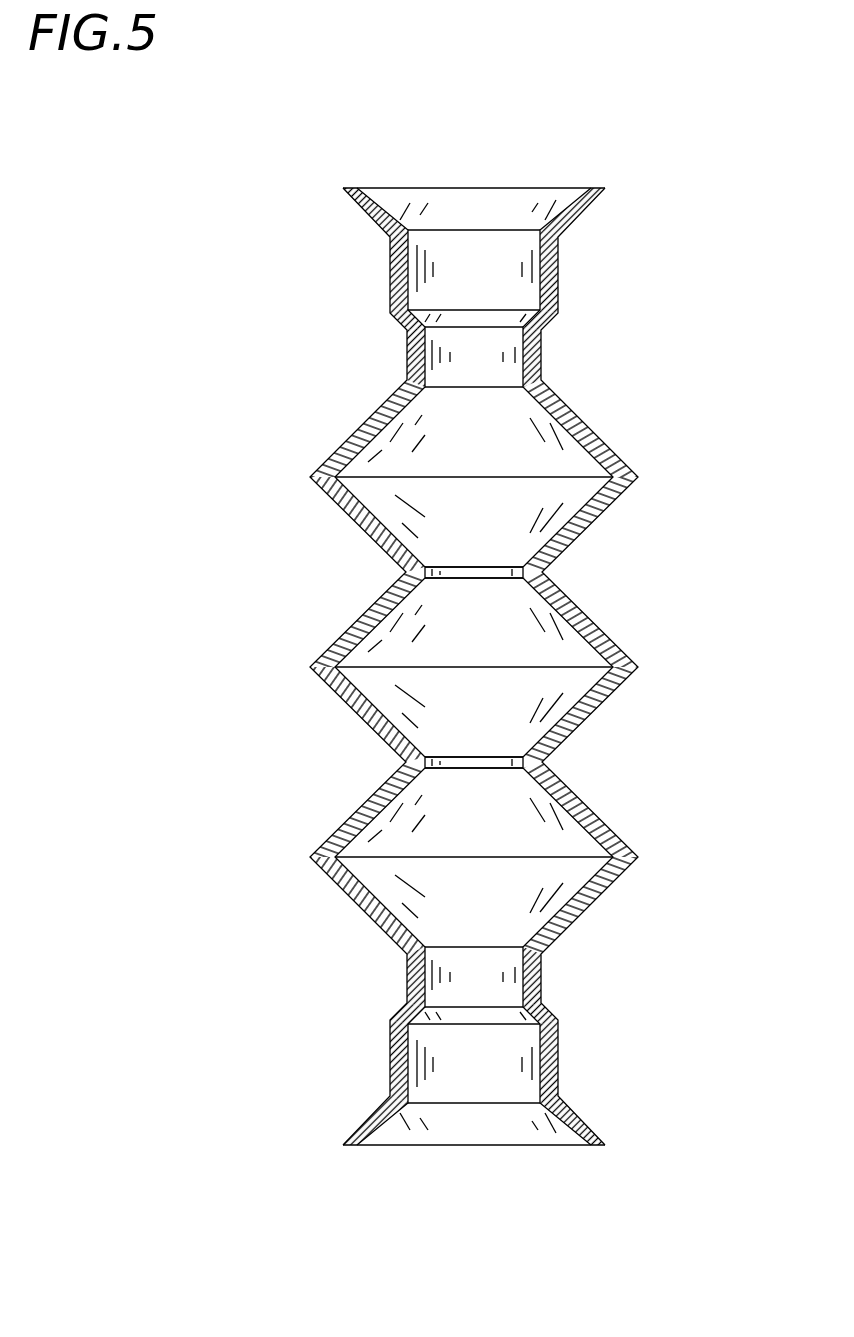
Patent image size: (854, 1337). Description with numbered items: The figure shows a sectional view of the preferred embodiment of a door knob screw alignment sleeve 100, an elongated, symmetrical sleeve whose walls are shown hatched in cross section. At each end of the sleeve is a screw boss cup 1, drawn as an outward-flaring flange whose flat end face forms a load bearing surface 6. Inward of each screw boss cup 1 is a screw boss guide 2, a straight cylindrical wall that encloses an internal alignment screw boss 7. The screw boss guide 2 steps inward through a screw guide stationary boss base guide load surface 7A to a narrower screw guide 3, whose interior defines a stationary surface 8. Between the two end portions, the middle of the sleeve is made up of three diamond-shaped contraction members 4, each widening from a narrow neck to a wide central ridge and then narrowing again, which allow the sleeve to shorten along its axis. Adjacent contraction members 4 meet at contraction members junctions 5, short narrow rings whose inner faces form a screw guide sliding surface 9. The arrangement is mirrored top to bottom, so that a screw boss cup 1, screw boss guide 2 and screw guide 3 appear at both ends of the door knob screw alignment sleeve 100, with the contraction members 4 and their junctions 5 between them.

The door knob screw alignment sleeve 100 is at (562, 152).
The screw boss cup 1 is at (390, 213).
The screw boss guide 2 is at (392, 270).
The screw guide 3 is at (408, 358).
The contraction members 4 is at (340, 448).
The contraction members junctions 5 is at (412, 570).
The load bearing surfaces 6 is at (397, 188).
The internal alignment screw boss 7 is at (538, 268).
The screw guide stationary boss base guide load surface 7A is at (540, 316).
The stationary surface 8 is at (469, 379).
The screw guide sliding surface 9 is at (472, 573).